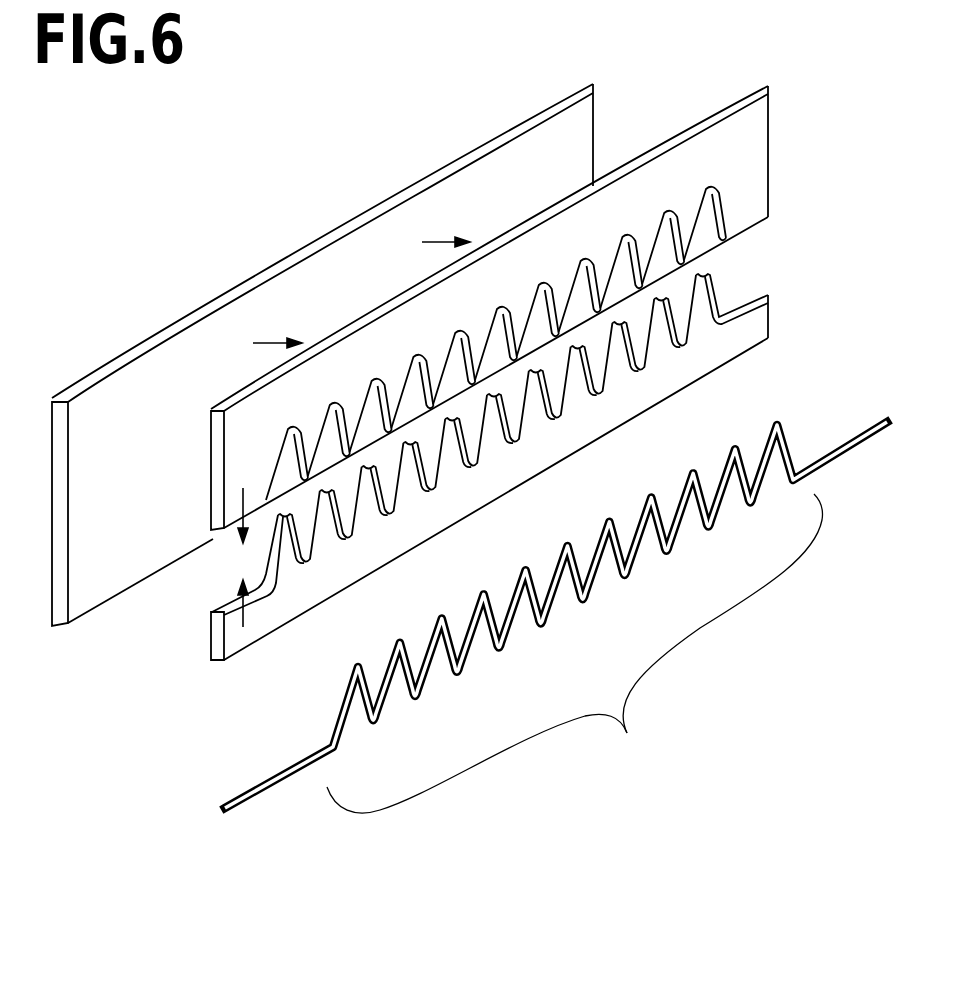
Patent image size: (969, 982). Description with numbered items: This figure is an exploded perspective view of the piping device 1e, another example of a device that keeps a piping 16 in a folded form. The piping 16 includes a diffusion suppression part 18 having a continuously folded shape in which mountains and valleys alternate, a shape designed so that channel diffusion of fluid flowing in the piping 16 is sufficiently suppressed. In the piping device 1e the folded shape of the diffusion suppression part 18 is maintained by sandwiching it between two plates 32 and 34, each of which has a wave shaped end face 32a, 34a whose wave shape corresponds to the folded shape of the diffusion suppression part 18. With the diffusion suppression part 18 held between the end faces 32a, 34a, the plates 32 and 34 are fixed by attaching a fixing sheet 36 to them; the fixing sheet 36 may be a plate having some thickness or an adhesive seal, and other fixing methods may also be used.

The piping device 1e is at (196, 194).
The piping 16 is at (840, 447).
The diffusion suppression part 18 is at (575, 653).
The plate 32 is at (770, 160).
The wave shaped end face 32a is at (703, 238).
The plate 34 is at (769, 310).
The wave shaped end face 34a is at (697, 315).
The fixing sheet 36 is at (428, 177).